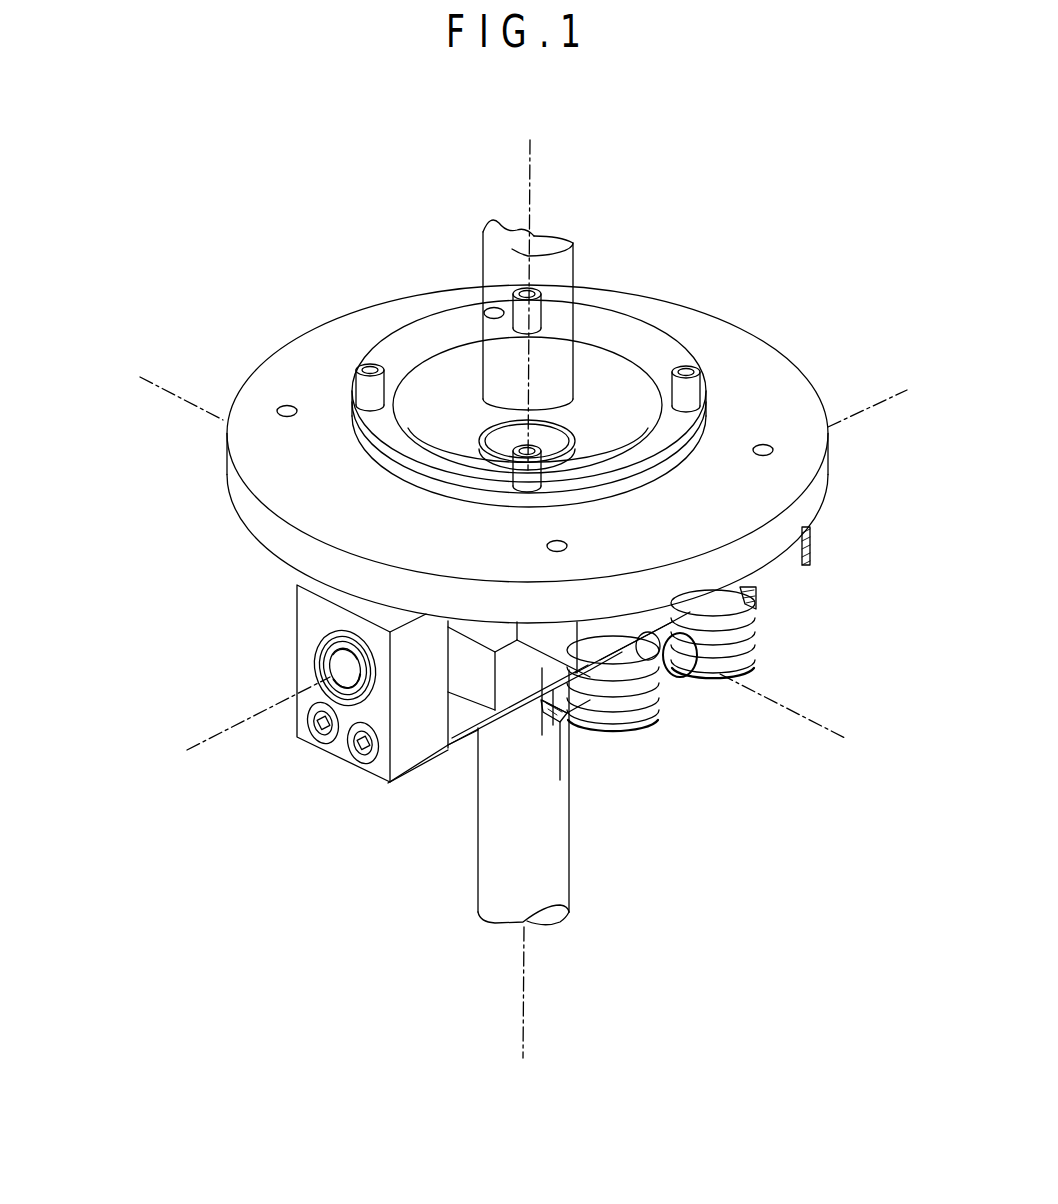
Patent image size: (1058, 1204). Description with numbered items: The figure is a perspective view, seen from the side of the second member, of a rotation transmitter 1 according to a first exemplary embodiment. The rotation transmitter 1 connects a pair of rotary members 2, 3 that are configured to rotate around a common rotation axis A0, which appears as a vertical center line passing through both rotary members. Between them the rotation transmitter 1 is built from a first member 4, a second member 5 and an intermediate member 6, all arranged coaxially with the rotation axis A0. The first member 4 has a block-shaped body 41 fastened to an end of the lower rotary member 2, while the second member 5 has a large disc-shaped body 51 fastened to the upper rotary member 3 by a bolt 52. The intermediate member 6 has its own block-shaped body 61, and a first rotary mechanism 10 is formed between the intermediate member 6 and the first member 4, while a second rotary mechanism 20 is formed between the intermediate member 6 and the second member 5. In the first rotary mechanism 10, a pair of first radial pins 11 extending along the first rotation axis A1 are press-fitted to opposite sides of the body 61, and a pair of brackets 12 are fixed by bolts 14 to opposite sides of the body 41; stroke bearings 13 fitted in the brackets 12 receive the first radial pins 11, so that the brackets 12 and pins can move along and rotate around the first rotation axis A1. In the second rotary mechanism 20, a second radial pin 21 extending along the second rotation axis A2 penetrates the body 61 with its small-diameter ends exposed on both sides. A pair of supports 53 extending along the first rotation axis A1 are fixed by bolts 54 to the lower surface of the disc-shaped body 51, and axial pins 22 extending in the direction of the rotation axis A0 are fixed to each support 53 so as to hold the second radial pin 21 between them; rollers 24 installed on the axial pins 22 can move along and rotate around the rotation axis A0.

The rotation transmitter 1 is at (268, 208).
The rotary member 2 is at (468, 897).
The rotary member 3 is at (440, 240).
The first member 4 is at (500, 748).
The second member 5 is at (512, 512).
The intermediate member 6 is at (586, 780).
The first rotary mechanism 10 is at (260, 716).
The first radial pin 11 is at (330, 668).
The bracket 12 is at (318, 690).
The stroke bearing 13 is at (316, 650).
The bolt 14 is at (356, 762).
The second rotary mechanism 20 is at (704, 723).
The second radial pin 21 is at (678, 677).
The axial pin 22 is at (726, 670).
The roller 24 is at (755, 652).
The block-shaped body 41 is at (450, 760).
The disc-shaped body 51 is at (240, 495).
The bolt 52 is at (535, 294).
The support 53 is at (808, 548).
The bolt 54 is at (763, 587).
The block-shaped body 61 is at (562, 778).
The rotation axis A0 is at (527, 192).
The first rotation axis A1 is at (903, 388).
The second rotation axis A2 is at (157, 388).